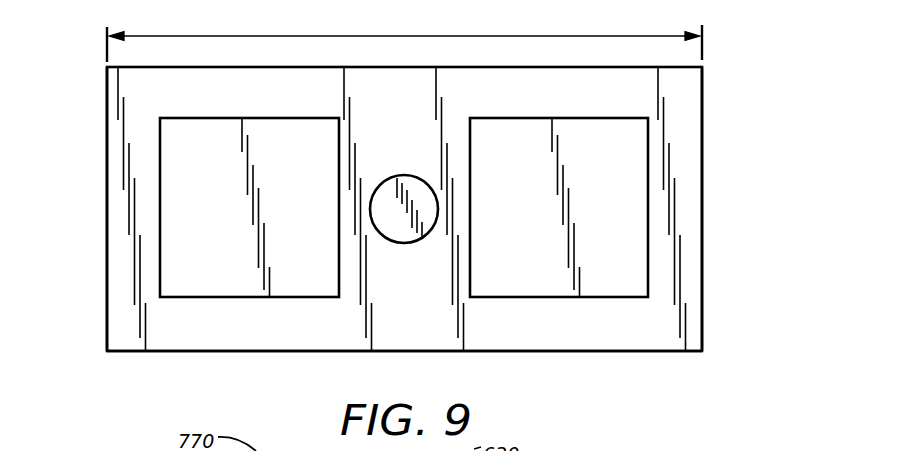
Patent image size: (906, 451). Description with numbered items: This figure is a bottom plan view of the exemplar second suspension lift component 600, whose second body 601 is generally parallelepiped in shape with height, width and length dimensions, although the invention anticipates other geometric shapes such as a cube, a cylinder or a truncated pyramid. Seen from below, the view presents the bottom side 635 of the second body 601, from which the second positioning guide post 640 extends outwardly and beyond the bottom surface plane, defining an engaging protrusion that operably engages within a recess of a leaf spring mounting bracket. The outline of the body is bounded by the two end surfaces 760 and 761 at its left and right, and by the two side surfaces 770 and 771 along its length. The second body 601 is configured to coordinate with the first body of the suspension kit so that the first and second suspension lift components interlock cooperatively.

The second suspension lift component 600 is at (702, 144).
The second body 601 is at (113, 135).
The bottom side 635 is at (702, 298).
The second positioning guide post 640 is at (408, 195).
The end surface 760 is at (702, 217).
The end surface 761 is at (107, 198).
The side surface 770 is at (548, 351).
The side surface 771 is at (259, 67).